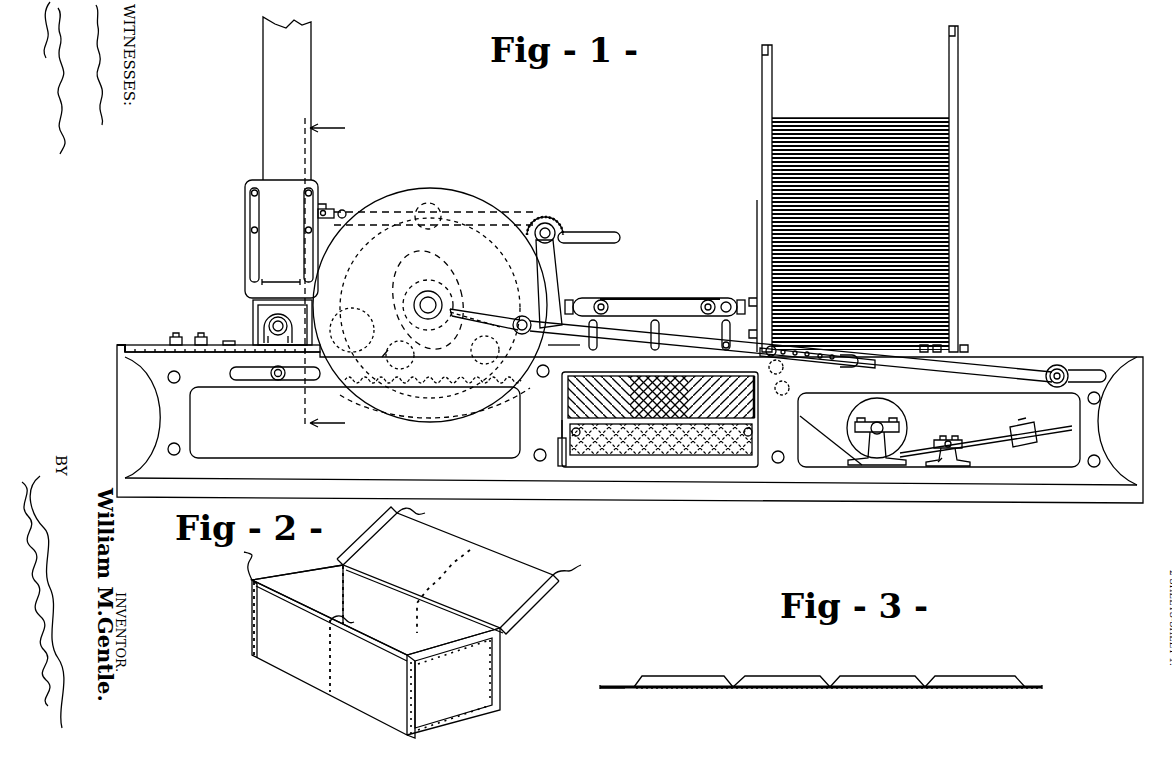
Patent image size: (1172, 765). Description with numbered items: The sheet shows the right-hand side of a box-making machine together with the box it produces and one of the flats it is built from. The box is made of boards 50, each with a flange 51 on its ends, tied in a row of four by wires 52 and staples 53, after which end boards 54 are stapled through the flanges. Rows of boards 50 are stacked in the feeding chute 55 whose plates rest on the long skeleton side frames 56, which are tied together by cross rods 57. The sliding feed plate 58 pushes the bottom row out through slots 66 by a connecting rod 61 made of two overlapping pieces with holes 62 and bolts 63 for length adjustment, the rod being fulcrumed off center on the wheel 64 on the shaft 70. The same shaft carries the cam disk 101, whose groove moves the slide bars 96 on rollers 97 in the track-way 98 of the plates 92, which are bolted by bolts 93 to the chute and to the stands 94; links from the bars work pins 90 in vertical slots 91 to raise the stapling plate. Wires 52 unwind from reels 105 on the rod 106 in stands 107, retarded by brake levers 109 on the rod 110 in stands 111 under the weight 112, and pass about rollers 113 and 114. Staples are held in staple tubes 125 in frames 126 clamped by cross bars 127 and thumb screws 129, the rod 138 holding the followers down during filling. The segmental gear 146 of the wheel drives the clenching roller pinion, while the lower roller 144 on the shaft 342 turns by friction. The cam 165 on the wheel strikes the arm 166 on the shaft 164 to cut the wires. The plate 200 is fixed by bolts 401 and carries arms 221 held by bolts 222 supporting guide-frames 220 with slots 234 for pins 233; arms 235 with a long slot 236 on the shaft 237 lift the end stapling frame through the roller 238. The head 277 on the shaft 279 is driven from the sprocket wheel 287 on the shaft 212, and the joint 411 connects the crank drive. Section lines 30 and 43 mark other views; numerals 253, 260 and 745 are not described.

In FIG. 1, the section line 30— 30 is at (316, 275).
In FIG. 1, the section line 43— 43 is at (753, 276).
In FIG. 1, the boards 50 is at (905, 122).
In FIG. 2, the boards 50 is at (402, 624).
In FIG. 3, the boards 50 is at (684, 690).
In FIG. 2, the flange 51 is at (362, 540).
In FIG. 3, the flange 51 is at (686, 676).
In FIG. 1, the wires 52 is at (830, 425).
In FIG. 2, the wires 52 is at (425, 514).
In FIG. 3, the wires 52 is at (612, 686).
In FIG. 2, the staples 53 is at (338, 570).
In FIG. 3, the staples 53 is at (648, 690).
In FIG. 2, the end boards 54 is at (376, 650).
In FIG. 1, the feeding chute 55 is at (762, 133).
In FIG. 1, the side frames 56 is at (165, 412).
In FIG. 1, the cross rods 57 is at (168, 378).
In FIG. 1, the sliding feed plate 58 is at (1062, 364).
In FIG. 1, the connecting rod 61 is at (682, 344).
In FIG. 1, the holes 62 is at (818, 368).
In FIG. 1, the bolts 63 is at (768, 354).
In FIG. 1, the wheel 64 is at (462, 428).
In FIG. 1, the slots 66 is at (522, 315).
In FIG. 1, the shaft 70 is at (428, 296).
In FIG. 1, the pins 90 is at (723, 344).
In FIG. 1, the vertical slots 91 is at (597, 326).
In FIG. 1, the plates 92 is at (625, 298).
In FIG. 1, the bolts 93 is at (569, 300).
In FIG. 1, the stands 94 is at (555, 255).
In FIG. 1, the slide bars 96 is at (660, 298).
In FIG. 1, the rollers 97 is at (601, 300).
In FIG. 1, the track-way 98 is at (728, 302).
In FIG. 1, the cam disk 101 is at (455, 230).
In FIG. 1, the reels 105 is at (892, 410).
In FIG. 1, the rod 106 is at (884, 427).
In FIG. 1, the stands 107 is at (865, 464).
In FIG. 1, the brake levers 109 is at (982, 440).
In FIG. 1, the rod 110 is at (949, 438).
In FIG. 1, the stands 111 is at (950, 452).
In FIG. 1, the weight 112 is at (1024, 430).
In FIG. 1, the roller 113 is at (782, 395).
In FIG. 1, the roller 114 is at (782, 371).
In FIG. 1, the staple tubes 125 is at (598, 385).
In FIG. 1, the frames 126 is at (755, 400).
In FIG. 1, the cross bars 127 is at (560, 430).
In FIG. 1, the thumb screws 129 is at (578, 437).
In FIG. 1, the rod 138 is at (670, 456).
In FIG. 1, the lower roller 144 is at (520, 390).
In FIG. 1, the segmental gear 146 is at (405, 400).
In FIG. 1, the shaft 164 is at (360, 352).
In FIG. 1, the cam 165 is at (462, 357).
In FIG. 1, the arm 166 is at (390, 348).
In FIG. 1, the plate 200 is at (212, 355).
In FIG. 1, the shaft 212 is at (277, 382).
In FIG. 1, the guide-frames 220 is at (290, 262).
In FIG. 1, the arms 221 is at (252, 303).
In FIG. 1, the bolts 222 is at (176, 336).
In FIG. 1, the pins 233 is at (246, 190).
In FIG. 1, the slots 234 is at (300, 236).
In FIG. 1, the arms 235 is at (346, 211).
In FIG. 1, the long slot 236 is at (590, 232).
In FIG. 1, the shaft 237 is at (548, 228).
In FIG. 1, the roller 238 is at (432, 205).
In FIG. 1, the frame step 253 is at (122, 362).
In FIG. 1, the post 260 is at (268, 138).
In FIG. 1, the head 277 is at (259, 312).
In FIG. 1, the shaft 279 is at (270, 326).
In FIG. 1, the sprocket wheel 287 is at (268, 378).
In FIG. 1, the shaft 342 is at (543, 378).
In FIG. 1, the bolts 401 is at (222, 342).
In FIG. 1, the joint 411 is at (334, 208).
In FIG. 1, the guide 745 is at (574, 346).